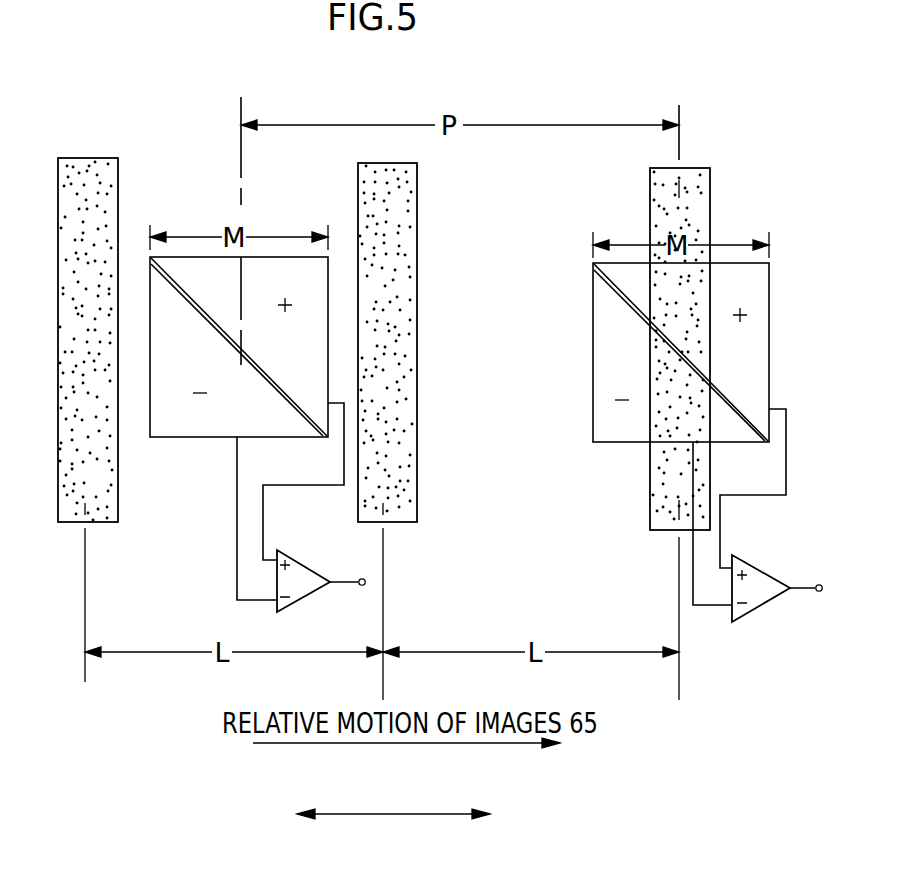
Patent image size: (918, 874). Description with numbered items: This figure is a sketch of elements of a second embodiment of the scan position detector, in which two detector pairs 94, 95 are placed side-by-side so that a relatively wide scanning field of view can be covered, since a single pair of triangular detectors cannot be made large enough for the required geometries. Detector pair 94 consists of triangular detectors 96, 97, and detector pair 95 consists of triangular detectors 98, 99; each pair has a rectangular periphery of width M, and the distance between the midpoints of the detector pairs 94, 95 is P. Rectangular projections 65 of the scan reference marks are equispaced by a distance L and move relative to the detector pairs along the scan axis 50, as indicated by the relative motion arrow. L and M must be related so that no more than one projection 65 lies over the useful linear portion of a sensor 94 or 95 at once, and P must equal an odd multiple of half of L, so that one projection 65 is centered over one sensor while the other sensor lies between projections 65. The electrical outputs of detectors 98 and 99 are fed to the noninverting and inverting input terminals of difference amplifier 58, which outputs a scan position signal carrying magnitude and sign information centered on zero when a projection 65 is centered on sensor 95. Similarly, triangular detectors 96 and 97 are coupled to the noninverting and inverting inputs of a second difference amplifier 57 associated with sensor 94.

The scan axis 50 is at (393, 795).
The difference amplifier 57 is at (308, 598).
The difference amplifier 58 is at (757, 605).
The projection 65 is at (118, 522).
The detector pair 94 is at (152, 440).
The detector pair 95 is at (593, 443).
The triangular detector 96 is at (294, 357).
The triangular detector 97 is at (196, 357).
The triangular detector 98 is at (746, 380).
The triangular detector 99 is at (627, 371).